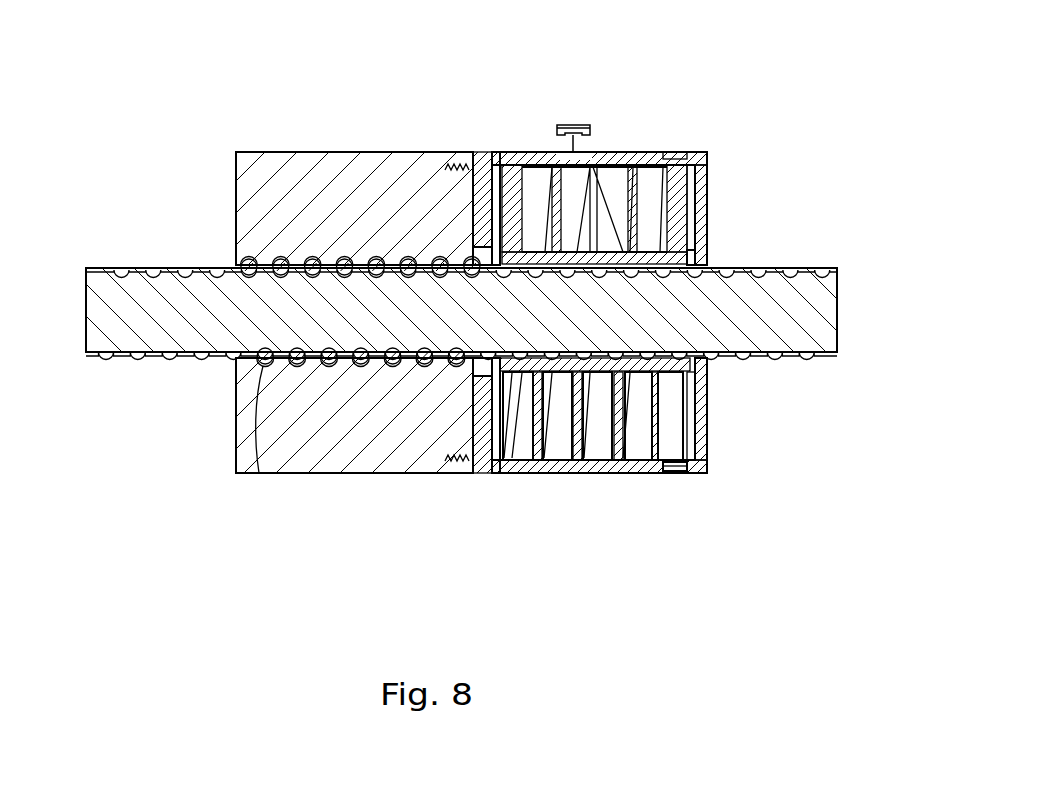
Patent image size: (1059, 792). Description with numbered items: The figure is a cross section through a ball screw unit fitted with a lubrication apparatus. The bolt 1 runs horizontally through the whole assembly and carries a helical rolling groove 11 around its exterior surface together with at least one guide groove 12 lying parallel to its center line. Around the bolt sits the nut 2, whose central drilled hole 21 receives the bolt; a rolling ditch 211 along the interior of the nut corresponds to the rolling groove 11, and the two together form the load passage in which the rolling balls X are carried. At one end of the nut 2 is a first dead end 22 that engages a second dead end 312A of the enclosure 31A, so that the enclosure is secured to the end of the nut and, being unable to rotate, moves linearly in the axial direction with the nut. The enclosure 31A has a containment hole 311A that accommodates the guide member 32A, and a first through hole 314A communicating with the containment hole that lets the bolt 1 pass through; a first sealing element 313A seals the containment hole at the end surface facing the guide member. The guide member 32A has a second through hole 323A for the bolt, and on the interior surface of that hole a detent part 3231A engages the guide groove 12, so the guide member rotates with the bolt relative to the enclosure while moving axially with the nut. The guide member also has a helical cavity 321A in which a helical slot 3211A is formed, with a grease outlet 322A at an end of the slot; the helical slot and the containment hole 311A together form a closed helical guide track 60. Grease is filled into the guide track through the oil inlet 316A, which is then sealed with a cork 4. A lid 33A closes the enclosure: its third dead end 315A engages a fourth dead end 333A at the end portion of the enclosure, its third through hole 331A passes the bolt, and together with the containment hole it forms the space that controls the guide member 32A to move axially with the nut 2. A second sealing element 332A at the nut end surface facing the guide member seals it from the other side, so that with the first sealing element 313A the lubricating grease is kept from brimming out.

The bolt 1 is at (432, 315).
The helical rolling groove 11 is at (117, 355).
The guide groove 12 is at (120, 268).
The nut 2 is at (335, 292).
The central drilled hole 21 is at (236, 357).
The first dead end 22 is at (393, 152).
The rolling ditch 211 is at (259, 473).
The rolling ball X is at (241, 265).
The cork 4 is at (581, 125).
The closed helical guide track 60 is at (675, 472).
The enclosure 31A is at (664, 149).
The containment hole 311A is at (653, 182).
The second dead end 312A is at (458, 163).
The first sealing element 313A is at (498, 152).
The first through hole 314A is at (470, 250).
The third dead end 315A is at (703, 153).
The oil inlet 316A is at (550, 152).
The guide member 32A is at (642, 480).
The helical cavity 321A is at (615, 460).
The helical slot 3211A is at (578, 460).
The grease outlet 322A is at (685, 366).
The second through hole 323A is at (700, 265).
The detent part 3231A is at (606, 152).
The lid 33A is at (703, 175).
The third through hole 331A is at (700, 247).
The second sealing element 332A is at (695, 210).
The fourth dead end 333A is at (685, 470).